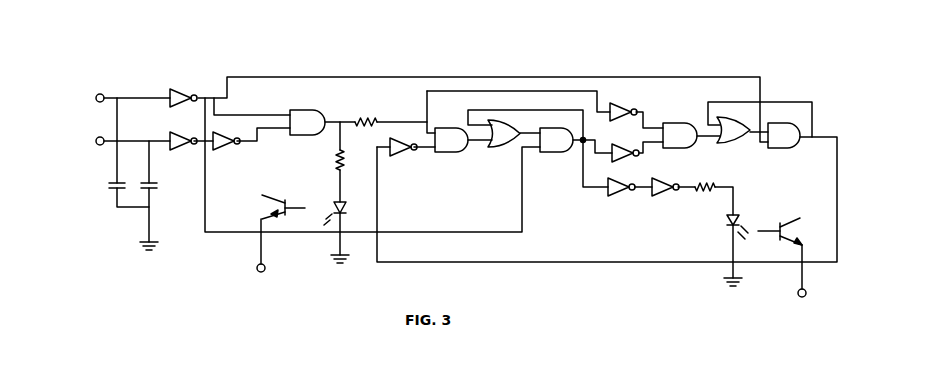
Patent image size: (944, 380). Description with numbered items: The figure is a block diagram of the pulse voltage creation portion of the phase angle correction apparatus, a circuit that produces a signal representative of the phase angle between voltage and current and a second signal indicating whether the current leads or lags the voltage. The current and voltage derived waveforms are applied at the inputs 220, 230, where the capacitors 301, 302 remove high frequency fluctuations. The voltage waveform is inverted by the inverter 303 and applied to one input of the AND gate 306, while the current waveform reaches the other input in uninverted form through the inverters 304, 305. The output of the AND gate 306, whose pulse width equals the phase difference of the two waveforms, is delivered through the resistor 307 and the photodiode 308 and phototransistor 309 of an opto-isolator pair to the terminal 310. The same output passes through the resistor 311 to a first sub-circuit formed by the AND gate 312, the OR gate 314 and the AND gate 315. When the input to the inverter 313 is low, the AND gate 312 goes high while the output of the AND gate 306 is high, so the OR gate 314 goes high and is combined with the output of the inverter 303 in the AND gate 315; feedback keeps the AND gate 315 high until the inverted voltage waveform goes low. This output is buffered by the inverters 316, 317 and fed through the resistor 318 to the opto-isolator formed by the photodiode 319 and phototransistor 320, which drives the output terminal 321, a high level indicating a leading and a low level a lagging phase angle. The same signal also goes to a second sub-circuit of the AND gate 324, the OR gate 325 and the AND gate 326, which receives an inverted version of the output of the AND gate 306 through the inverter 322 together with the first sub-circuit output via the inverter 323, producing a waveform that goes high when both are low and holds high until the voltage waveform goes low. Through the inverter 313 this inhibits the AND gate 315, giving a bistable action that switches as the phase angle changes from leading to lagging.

The current derived waveform input 220 is at (96, 95).
The voltage derived waveform input 230 is at (96, 138).
The capacitor 301 is at (107, 196).
The capacitor 302 is at (155, 191).
The inverter 303 is at (172, 83).
The inverter 304 is at (172, 128).
The inverter 305 is at (225, 150).
The AND gate 306 is at (302, 108).
The resistor 307 is at (333, 151).
The photodiode 308 is at (329, 193).
The phototransistor 309 is at (264, 223).
The terminal 310 is at (253, 273).
The resistor 311 is at (380, 107).
The AND gate 312 is at (438, 124).
The inverter 313 is at (402, 158).
The OR gate 314 is at (498, 157).
The AND gate 315 is at (568, 157).
The inverter 316 is at (608, 203).
The inverter 317 is at (675, 203).
The resistor 318 is at (722, 197).
The opto-isolator photodiode 319 is at (727, 235).
The opto-isolator phototransistor 320 is at (790, 213).
The output terminal 321 is at (795, 295).
The inverter 322 is at (630, 158).
The inverter 323 is at (623, 102).
The AND gate 324 is at (690, 120).
The OR gate 325 is at (735, 145).
The AND gate 326 is at (785, 158).